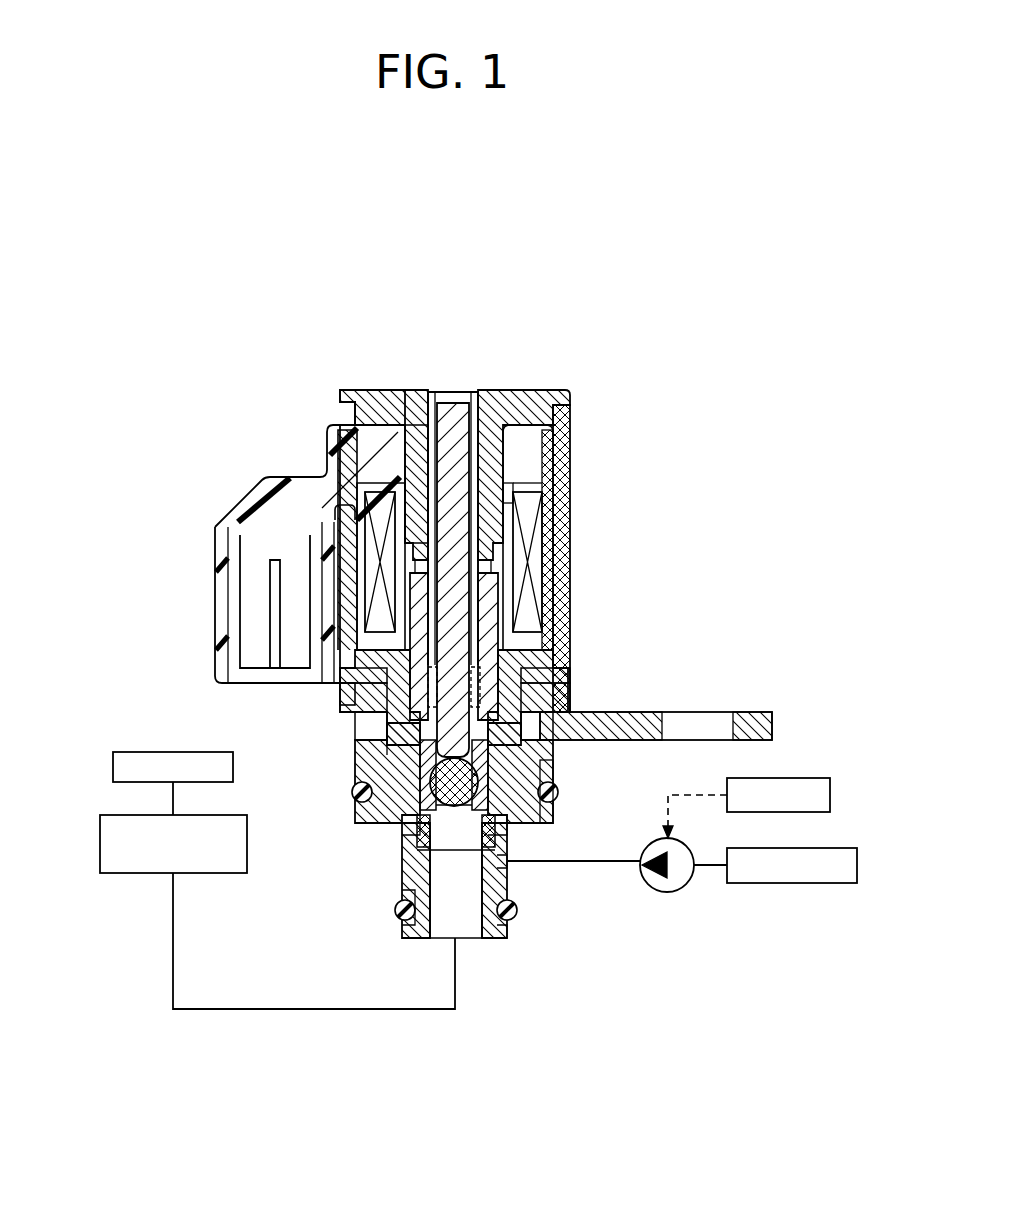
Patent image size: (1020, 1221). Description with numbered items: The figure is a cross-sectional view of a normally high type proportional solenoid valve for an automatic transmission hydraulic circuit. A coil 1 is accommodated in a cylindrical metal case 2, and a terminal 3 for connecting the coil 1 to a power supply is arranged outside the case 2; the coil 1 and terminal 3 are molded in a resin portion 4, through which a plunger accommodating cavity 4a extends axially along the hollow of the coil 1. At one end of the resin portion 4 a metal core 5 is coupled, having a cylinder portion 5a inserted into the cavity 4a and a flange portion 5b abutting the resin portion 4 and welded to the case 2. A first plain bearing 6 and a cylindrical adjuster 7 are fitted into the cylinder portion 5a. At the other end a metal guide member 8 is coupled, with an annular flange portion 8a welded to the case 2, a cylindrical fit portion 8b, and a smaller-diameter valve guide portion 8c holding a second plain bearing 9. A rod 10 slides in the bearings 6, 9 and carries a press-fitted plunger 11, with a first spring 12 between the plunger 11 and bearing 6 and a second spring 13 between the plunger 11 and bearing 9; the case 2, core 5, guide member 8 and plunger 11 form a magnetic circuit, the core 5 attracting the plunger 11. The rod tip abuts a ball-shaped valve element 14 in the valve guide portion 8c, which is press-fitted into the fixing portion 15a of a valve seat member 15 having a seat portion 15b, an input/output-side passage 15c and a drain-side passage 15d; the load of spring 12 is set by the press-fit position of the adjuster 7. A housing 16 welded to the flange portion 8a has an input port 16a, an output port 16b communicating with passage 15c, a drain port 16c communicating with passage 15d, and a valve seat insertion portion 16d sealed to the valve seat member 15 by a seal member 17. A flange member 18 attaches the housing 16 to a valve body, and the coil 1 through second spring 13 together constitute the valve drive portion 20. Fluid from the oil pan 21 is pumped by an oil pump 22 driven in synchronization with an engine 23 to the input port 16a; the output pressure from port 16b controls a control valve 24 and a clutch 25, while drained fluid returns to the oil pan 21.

The coil 1 is at (528, 538).
The case 2 is at (545, 527).
The terminal 3 is at (262, 602).
The resin portion 4 is at (272, 492).
The plunger accommodating cavity 4a is at (547, 606).
The core 5 is at (403, 395).
The cylinder portion 5a is at (362, 396).
The flange portion 5b is at (387, 395).
The first plain bearing 6 is at (556, 457).
The adjuster 7 is at (508, 395).
The guide member 8 is at (547, 656).
The flange portion 8a is at (551, 681).
The fit portion 8b is at (552, 704).
The valve guide portion 8c is at (530, 775).
The second plain bearing 9 is at (362, 720).
The rod 10 is at (460, 397).
The plunger 11 is at (490, 590).
The first spring 12 is at (543, 500).
The second spring 13 is at (343, 694).
The valve element 14 is at (428, 776).
The valve seat member 15 is at (403, 837).
The fixing portion 15a is at (560, 789).
The seat portion 15b is at (527, 829).
The input/output-side passage 15c is at (510, 930).
The drain-side passage 15d is at (400, 816).
The housing 16 is at (510, 942).
The input port 16a is at (527, 872).
The output port 16b is at (462, 930).
The drain port 16c is at (367, 745).
The valve seat insertion portion 16d is at (398, 893).
The seal member 17 is at (420, 842).
The flange member 18 is at (752, 712).
The valve drive portion 20 is at (607, 422).
The oil pan 21 is at (818, 883).
The oil pump 22 is at (670, 892).
The engine 23 is at (824, 778).
The control valve 24 is at (130, 875).
The clutch 25 is at (128, 752).